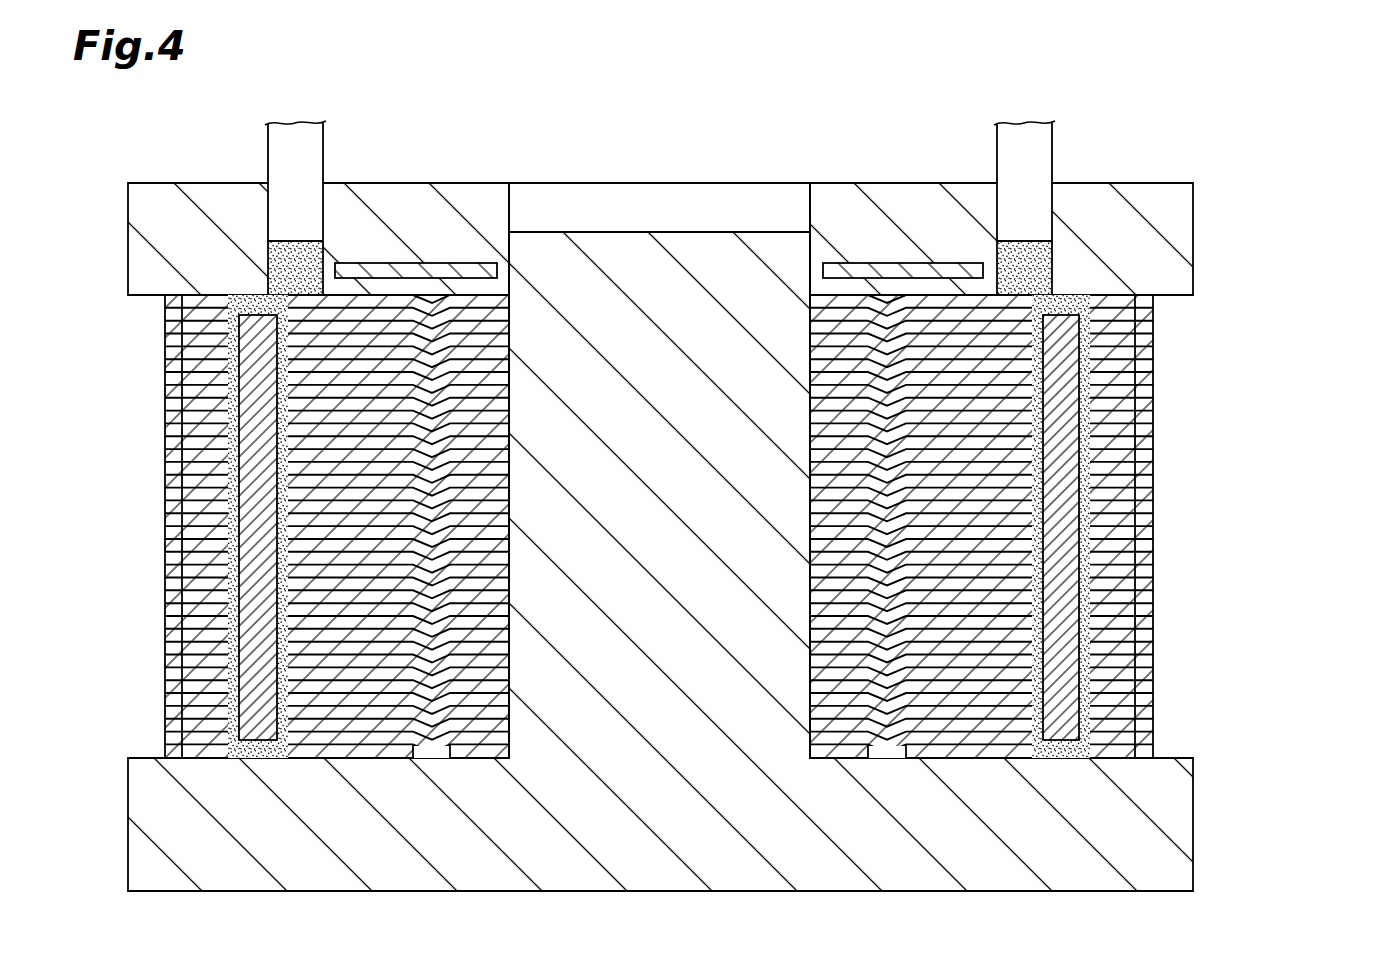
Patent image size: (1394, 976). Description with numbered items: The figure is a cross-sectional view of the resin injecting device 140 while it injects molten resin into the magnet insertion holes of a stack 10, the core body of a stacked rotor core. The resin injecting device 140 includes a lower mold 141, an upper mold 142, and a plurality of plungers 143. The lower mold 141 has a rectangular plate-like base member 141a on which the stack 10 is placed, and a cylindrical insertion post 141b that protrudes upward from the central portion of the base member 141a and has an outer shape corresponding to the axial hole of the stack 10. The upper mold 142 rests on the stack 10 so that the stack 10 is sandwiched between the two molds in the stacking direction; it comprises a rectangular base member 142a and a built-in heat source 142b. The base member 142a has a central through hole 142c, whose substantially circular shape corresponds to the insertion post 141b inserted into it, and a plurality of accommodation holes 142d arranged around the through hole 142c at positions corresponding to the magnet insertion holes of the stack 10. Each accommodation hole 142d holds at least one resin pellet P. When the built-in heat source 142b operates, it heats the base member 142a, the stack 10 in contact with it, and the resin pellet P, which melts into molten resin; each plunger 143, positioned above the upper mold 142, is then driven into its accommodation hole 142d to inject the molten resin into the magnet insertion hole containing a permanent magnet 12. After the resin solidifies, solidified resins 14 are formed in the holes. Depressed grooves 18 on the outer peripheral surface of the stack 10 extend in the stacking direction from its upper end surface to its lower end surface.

The stack 10 is at (683, 526).
The permanent magnet 12 is at (237, 363).
The solidified resin 14 is at (237, 748).
The depressed groove 18 is at (182, 684).
The resin injecting device 140 is at (761, 511).
The lower mold 141 is at (716, 533).
The base member 141a is at (1162, 870).
The insertion post 141b is at (680, 243).
The upper mold 142 is at (716, 200).
The base member 142a is at (1168, 205).
The built-in heat source 142b is at (453, 263).
The through hole 142c is at (509, 208).
The accommodation hole 142d is at (272, 262).
The plunger 143 is at (323, 143).
The resin pellet P is at (300, 257).